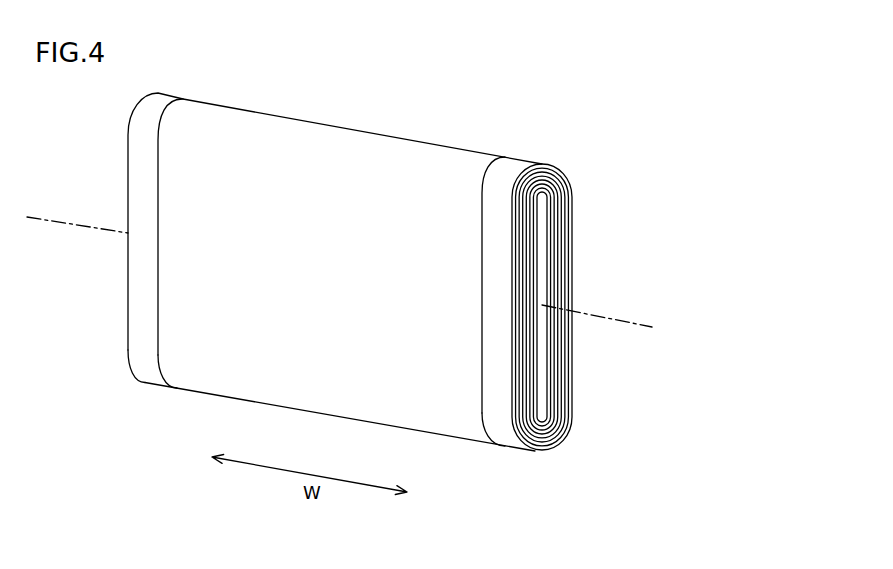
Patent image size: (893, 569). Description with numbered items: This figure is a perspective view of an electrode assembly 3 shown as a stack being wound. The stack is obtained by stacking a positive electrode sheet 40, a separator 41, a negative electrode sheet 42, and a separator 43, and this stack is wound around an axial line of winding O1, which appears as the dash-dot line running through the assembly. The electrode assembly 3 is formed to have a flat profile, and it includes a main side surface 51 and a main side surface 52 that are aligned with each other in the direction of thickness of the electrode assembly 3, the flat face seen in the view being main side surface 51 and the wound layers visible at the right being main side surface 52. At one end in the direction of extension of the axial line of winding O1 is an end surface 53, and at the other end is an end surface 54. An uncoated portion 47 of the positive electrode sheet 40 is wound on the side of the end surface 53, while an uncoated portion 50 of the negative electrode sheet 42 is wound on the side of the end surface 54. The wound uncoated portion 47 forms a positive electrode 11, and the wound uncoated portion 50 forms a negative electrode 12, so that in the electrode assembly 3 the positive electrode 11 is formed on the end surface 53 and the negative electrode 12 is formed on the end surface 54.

The electrode assembly 3 is at (295, 297).
The positive electrode 11 is at (147, 363).
The negative electrode 12 is at (508, 435).
The positive electrode sheet 40 is at (611, 307).
The separator 41 is at (611, 307).
The negative electrode sheet 42 is at (611, 307).
The separator 43 is at (570, 415).
The uncoated portion 47 is at (155, 277).
The uncoated portion 50 is at (505, 343).
The main side surface 51 is at (320, 387).
The main side surface 52 is at (609, 307).
The end surface 53 is at (108, 148).
The end surface 54 is at (609, 307).
The axial line of winding O1 is at (632, 325).